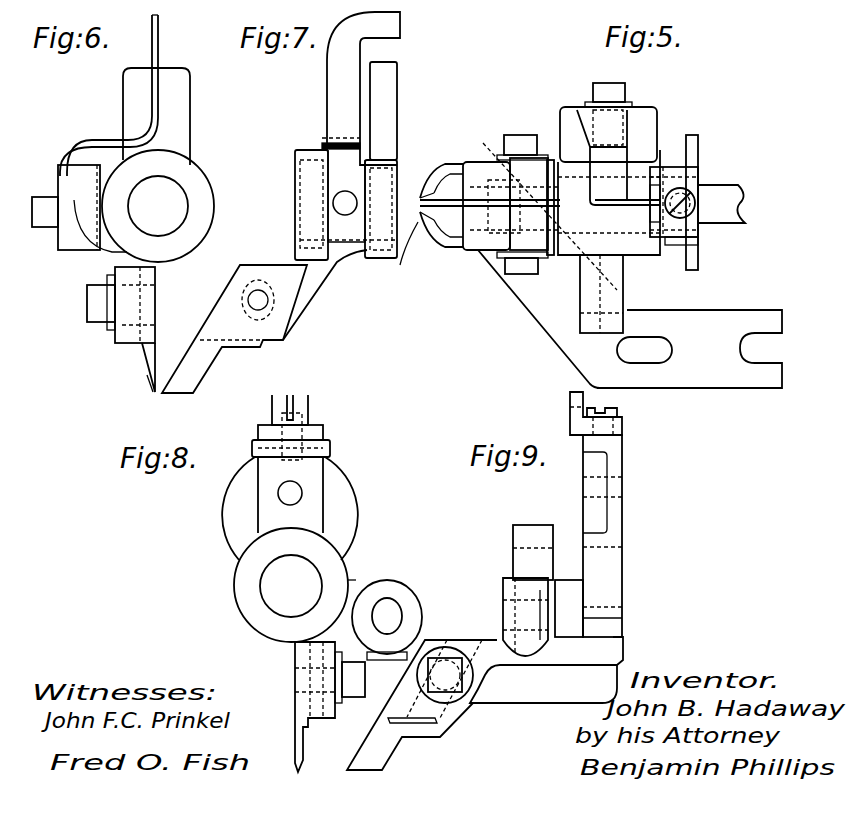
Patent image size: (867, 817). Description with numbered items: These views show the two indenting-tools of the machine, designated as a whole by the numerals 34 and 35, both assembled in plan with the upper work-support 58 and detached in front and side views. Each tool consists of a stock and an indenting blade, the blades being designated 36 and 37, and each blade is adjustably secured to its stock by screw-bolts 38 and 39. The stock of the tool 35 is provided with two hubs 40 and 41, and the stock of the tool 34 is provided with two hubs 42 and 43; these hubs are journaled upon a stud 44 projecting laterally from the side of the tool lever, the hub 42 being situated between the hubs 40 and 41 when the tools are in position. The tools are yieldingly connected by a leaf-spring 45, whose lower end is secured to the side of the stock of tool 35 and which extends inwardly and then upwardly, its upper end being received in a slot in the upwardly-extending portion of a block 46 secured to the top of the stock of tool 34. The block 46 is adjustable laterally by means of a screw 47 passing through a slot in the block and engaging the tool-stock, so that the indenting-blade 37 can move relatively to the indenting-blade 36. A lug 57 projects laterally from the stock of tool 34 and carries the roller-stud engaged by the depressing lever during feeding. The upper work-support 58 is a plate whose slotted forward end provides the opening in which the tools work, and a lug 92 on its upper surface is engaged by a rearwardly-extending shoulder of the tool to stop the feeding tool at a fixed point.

In FIG. 5, the indenting-tool 34 is at (480, 247).
In FIG. 8, the indenting-tool 34 is at (275, 489).
In FIG. 9, the indenting-tool 34 is at (546, 620).
In FIG. 6, the indenting-tool 35 is at (130, 160).
In FIG. 7, the indenting-tool 35 is at (322, 148).
In FIG. 5, the indenting-tool 35 is at (647, 120).
In FIG. 7, the indenting blade 36 is at (410, 255).
In FIG. 8, the indenting blade 36 is at (309, 747).
In FIG. 9, the indenting blade 36 is at (393, 742).
In FIG. 6, the indenting blade 37 is at (150, 370).
In FIG. 7, the indenting blade 37 is at (207, 372).
In FIG. 5, the indenting blade 37 is at (437, 170).
In FIG. 5, the screw-bolt 38 is at (510, 275).
In FIG. 8, the screw-bolt 38 is at (360, 675).
In FIG. 9, the screw-bolt 38 is at (447, 660).
In FIG. 6, the screw-bolt 39 is at (87, 302).
In FIG. 7, the screw-bolt 39 is at (252, 297).
In FIG. 5, the screw-bolt 39 is at (510, 155).
In FIG. 6, the hub 40 is at (206, 190).
In FIG. 7, the hub 40 is at (295, 198).
In FIG. 5, the hub 40 is at (560, 255).
In FIG. 7, the hub 41 is at (398, 164).
In FIG. 5, the hub 41 is at (402, 163).
In FIG. 5, the hub 42 is at (623, 277).
In FIG. 8, the hub 42 is at (337, 553).
In FIG. 9, the hub 42 is at (533, 521).
In FIG. 5, the hub 43 is at (697, 167).
In FIG. 9, the hub 43 is at (617, 563).
In FIG. 5, the stud 44 is at (550, 160).
In FIG. 6, the leaf-spring 45 is at (163, 39).
In FIG. 7, the leaf-spring 45 is at (398, 26).
In FIG. 5, the leaf-spring 45 is at (607, 122).
In FIG. 5, the block 46 is at (698, 232).
In FIG. 8, the block 46 is at (323, 432).
In FIG. 9, the block 46 is at (620, 422).
In FIG. 5, the screw 47 is at (692, 197).
In FIG. 8, the screw 47 is at (285, 418).
In FIG. 9, the screw 47 is at (618, 410).
In FIG. 8, the lug 57 is at (391, 583).
In FIG. 9, the lug 57 is at (503, 588).
In FIG. 5, the upper work-support 58 is at (723, 318).
In FIG. 5, the lug 92 is at (538, 207).